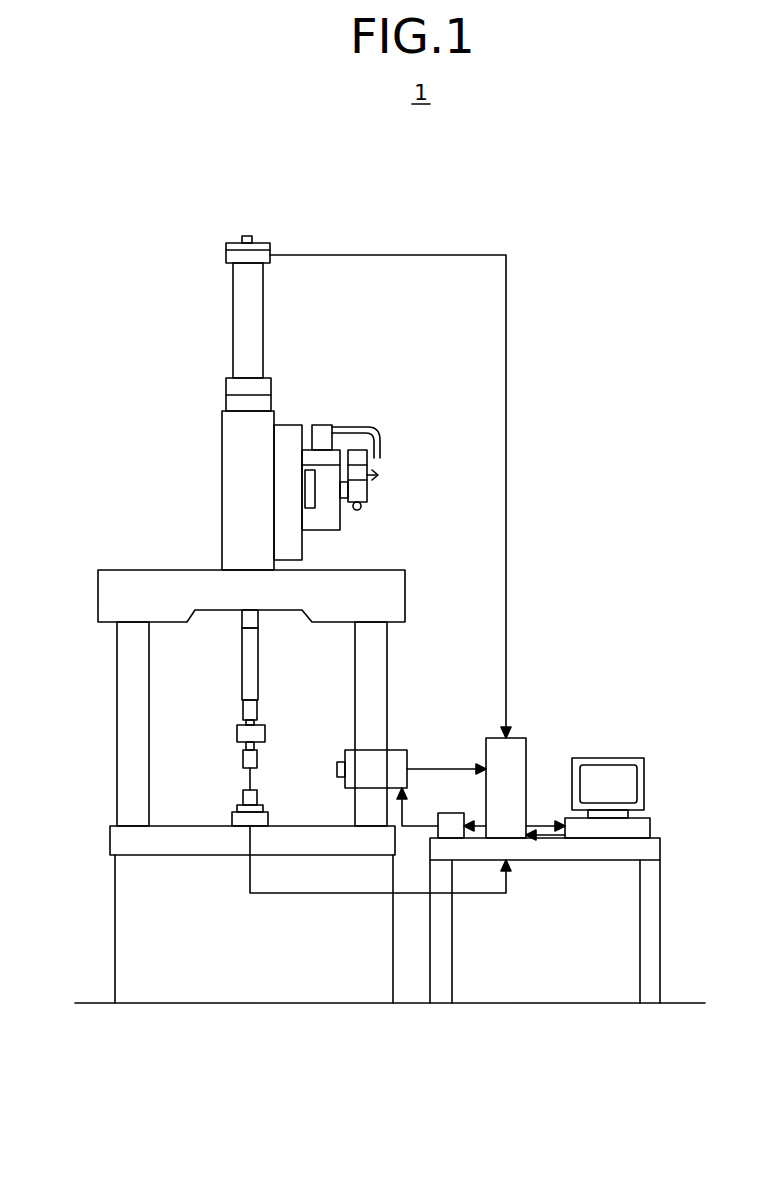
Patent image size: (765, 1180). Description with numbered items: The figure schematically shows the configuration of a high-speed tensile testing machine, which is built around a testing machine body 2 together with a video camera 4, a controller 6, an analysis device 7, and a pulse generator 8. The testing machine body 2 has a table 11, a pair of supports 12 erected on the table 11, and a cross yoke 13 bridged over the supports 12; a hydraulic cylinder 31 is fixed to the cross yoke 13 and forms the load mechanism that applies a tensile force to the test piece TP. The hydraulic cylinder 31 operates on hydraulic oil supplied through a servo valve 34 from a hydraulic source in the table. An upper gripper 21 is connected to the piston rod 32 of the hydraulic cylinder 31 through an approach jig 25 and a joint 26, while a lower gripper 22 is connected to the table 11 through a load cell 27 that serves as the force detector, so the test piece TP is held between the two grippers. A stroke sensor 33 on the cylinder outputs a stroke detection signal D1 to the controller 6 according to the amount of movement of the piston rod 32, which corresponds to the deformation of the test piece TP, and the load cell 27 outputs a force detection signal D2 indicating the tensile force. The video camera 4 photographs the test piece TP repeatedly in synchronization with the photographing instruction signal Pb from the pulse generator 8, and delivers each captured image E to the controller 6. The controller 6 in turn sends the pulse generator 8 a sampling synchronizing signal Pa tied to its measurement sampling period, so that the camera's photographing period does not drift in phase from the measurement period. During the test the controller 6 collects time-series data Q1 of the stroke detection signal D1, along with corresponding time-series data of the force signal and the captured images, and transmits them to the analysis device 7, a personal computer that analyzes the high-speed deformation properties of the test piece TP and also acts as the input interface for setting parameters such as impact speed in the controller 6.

The testing machine body 2 is at (121, 310).
The video camera 4 is at (397, 745).
The controller 6 is at (520, 740).
The analysis device 7 is at (635, 830).
The pulse generator 8 is at (450, 815).
The table 11 is at (112, 840).
The supports 12 is at (130, 680).
The cross yoke 13 is at (100, 600).
The upper gripper 21 is at (255, 762).
The lower gripper 22 is at (258, 798).
The approach jig 25 is at (240, 672).
The joint 26 is at (237, 735).
The load cell 27 is at (235, 820).
The hydraulic cylinder 31 is at (240, 478).
The piston rod 32 is at (240, 618).
The stroke sensor 33 is at (225, 258).
The servo valve 34 is at (287, 430).
The test piece TP is at (248, 783).
The stroke detection signal D1 is at (507, 390).
The force detection signal D2 is at (308, 893).
The captured image E is at (432, 768).
The sampling synchronizing signal Pa is at (480, 828).
The photographing instruction signal Pb is at (418, 832).
The time-series data of the stroke detection signal Q1 is at (543, 818).